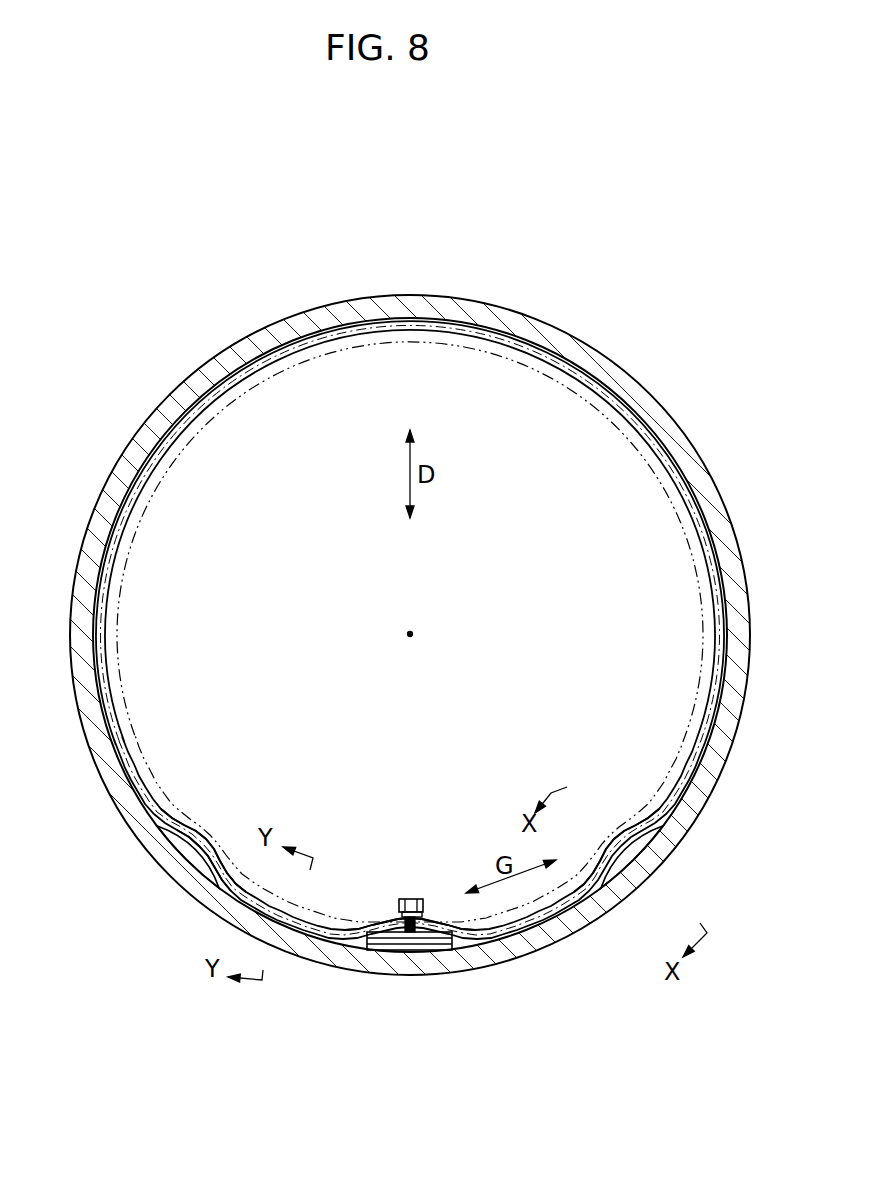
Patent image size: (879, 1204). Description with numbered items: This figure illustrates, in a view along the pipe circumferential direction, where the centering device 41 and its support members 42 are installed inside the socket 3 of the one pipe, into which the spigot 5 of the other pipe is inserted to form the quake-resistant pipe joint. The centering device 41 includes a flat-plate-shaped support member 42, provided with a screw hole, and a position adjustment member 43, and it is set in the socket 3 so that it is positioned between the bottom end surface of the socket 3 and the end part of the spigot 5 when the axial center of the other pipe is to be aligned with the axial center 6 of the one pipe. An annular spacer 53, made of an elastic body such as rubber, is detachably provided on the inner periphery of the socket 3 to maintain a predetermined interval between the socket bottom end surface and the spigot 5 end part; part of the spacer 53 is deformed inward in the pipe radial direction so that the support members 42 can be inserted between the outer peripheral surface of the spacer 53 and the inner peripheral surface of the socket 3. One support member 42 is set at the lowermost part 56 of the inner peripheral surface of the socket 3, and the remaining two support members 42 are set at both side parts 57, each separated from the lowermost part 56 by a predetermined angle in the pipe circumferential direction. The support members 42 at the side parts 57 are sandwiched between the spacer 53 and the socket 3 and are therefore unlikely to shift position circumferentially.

The socket 3 is at (606, 378).
The spigot 5 is at (235, 393).
The axial center 6 is at (411, 631).
The centering device 41 is at (430, 892).
The support member 42 is at (163, 824).
The position adjustment member 43 is at (410, 897).
The annular spacer 53 is at (190, 822).
The lowermost part 56 is at (393, 903).
The side parts 57 is at (218, 834).